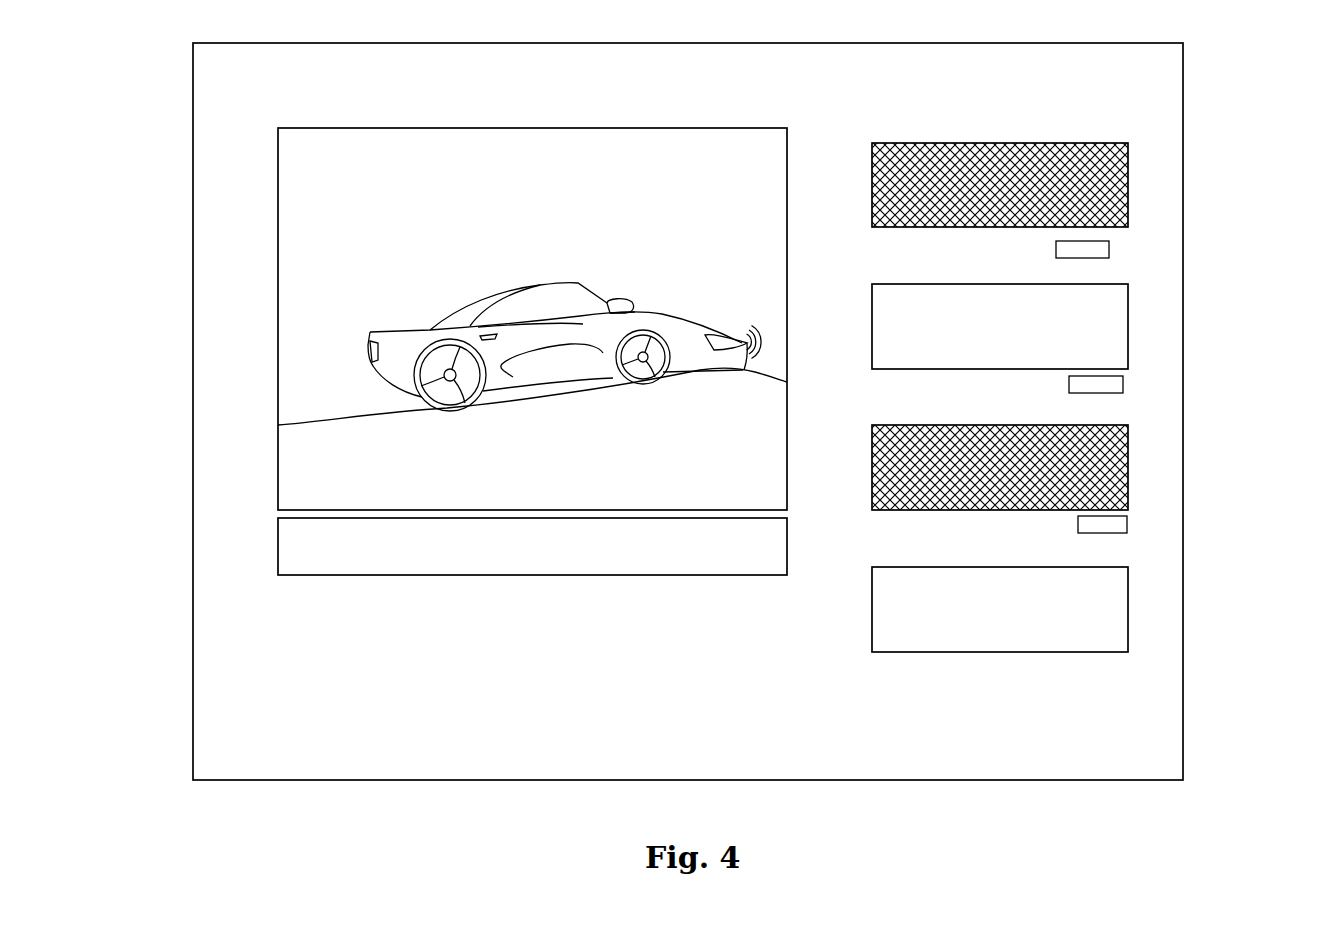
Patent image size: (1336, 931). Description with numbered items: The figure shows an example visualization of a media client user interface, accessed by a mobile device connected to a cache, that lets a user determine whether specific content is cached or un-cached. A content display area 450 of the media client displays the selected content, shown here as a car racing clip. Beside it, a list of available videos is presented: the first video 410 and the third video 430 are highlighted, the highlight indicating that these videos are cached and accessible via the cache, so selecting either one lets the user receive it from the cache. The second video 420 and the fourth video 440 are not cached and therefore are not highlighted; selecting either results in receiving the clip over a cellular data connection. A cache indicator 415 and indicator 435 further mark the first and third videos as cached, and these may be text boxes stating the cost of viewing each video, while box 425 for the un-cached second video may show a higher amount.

The first video 410 is at (1099, 170).
The indicator 415 is at (1099, 256).
The second video 420 is at (1098, 340).
The box 425 is at (1112, 389).
The third video 430 is at (1100, 475).
The indicator 435 is at (1120, 520).
The fourth video 440 is at (1100, 622).
The content display area 450 is at (333, 368).